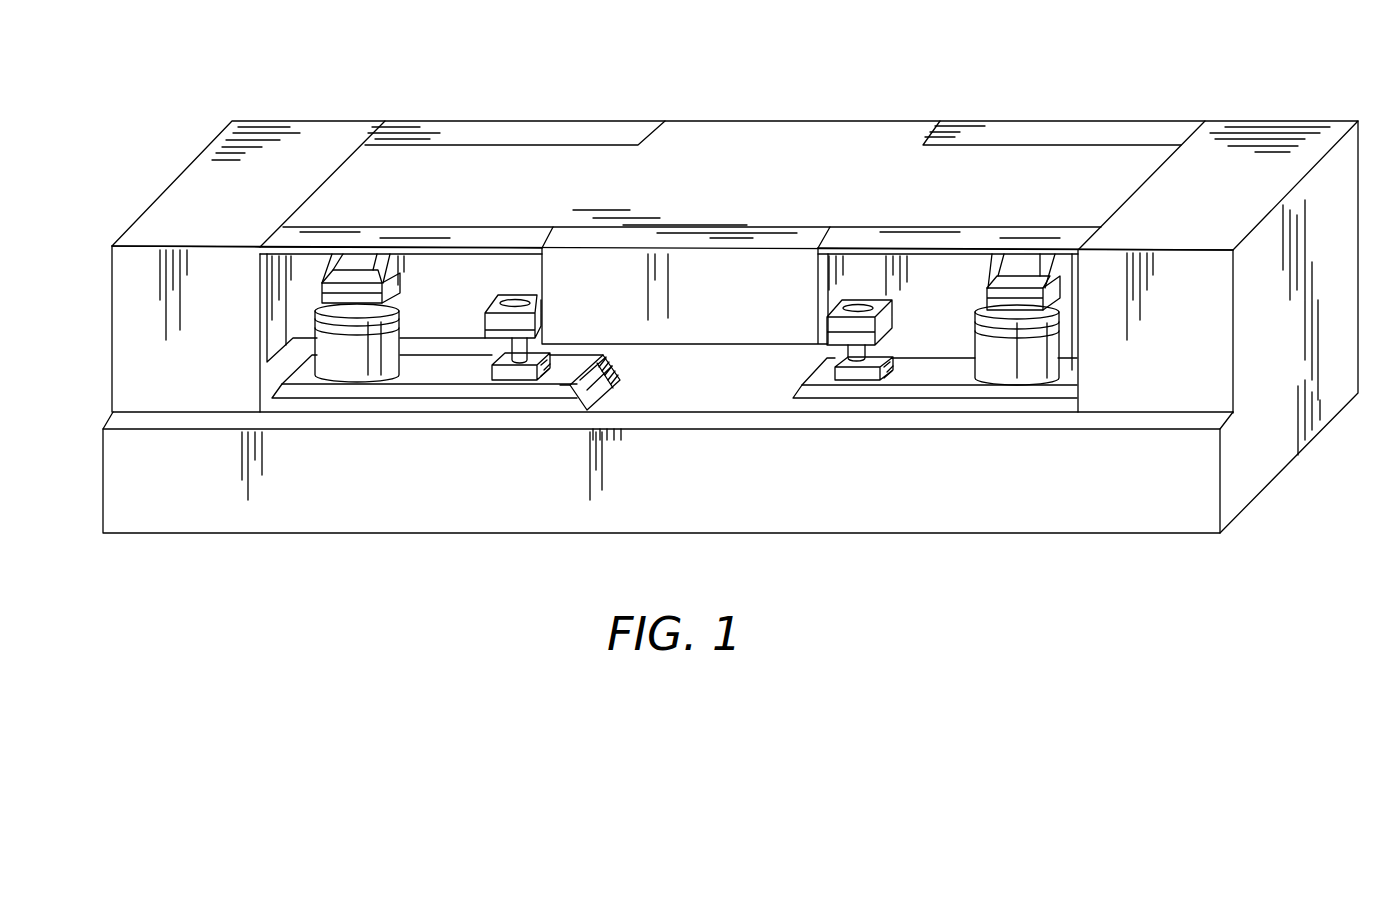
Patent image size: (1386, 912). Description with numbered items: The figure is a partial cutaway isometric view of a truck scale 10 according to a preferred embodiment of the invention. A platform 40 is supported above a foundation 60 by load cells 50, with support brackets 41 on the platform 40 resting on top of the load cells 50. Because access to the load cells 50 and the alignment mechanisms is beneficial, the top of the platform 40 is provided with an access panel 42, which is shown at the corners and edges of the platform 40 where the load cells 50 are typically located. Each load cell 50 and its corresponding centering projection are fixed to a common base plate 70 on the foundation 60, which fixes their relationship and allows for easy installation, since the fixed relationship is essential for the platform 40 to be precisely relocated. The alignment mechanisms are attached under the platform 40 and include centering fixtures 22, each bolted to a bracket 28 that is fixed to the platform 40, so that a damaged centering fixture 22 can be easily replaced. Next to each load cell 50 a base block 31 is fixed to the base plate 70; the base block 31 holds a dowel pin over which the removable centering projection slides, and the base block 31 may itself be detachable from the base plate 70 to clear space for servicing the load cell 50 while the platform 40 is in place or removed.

The truck scale 10 is at (882, 76).
The platform 40 is at (747, 206).
The access panel 42 is at (531, 137).
The foundation 60 is at (713, 393).
The base plate 70 is at (440, 378).
The load cell 50 is at (350, 360).
The support bracket 41 is at (395, 266).
The centering fixture 22 is at (488, 340).
The bracket 28 is at (515, 297).
The base block 31 is at (510, 377).